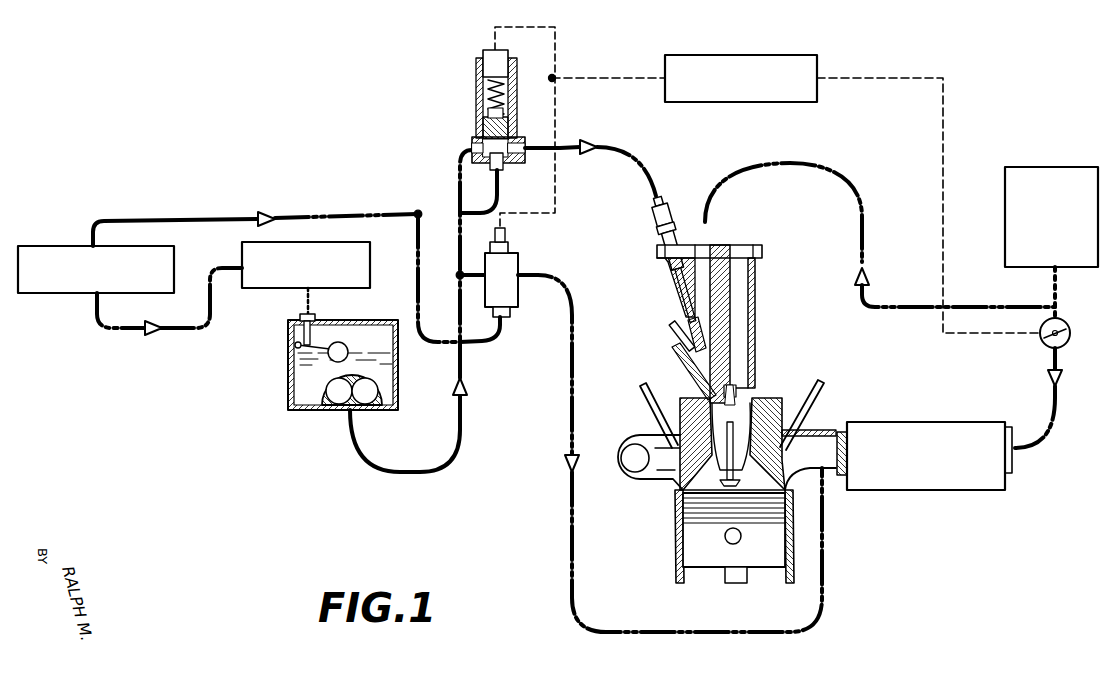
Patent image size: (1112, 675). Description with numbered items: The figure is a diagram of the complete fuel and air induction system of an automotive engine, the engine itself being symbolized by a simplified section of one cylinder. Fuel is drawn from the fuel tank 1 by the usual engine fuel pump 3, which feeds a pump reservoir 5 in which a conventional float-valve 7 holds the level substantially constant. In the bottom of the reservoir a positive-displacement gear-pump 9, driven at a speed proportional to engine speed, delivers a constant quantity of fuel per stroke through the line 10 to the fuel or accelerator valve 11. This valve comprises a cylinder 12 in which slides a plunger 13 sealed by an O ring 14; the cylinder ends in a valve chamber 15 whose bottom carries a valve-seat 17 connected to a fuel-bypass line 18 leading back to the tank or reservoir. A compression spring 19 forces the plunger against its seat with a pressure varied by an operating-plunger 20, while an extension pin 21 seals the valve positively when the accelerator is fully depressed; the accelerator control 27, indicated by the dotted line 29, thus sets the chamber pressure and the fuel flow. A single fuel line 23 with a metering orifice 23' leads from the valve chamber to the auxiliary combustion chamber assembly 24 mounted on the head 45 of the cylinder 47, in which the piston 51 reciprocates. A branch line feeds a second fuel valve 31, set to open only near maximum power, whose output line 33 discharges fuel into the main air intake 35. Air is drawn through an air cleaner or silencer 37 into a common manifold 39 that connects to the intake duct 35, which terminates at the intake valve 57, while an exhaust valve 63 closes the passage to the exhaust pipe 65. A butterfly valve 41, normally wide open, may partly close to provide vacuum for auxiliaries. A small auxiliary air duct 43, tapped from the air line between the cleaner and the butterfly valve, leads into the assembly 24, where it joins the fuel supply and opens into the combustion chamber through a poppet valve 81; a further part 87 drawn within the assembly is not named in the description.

The fuel tank 1 is at (40, 248).
The engine fuel pump 3 is at (256, 289).
The pump reservoir 5 is at (294, 383).
The float-valve 7 is at (299, 345).
The gear-pump 9 is at (340, 412).
The line 10 is at (436, 468).
The fuel or accelerator valve 11 is at (487, 121).
The cylinder 12 is at (477, 70).
The plunger 13 is at (488, 112).
The O ring 14 is at (482, 140).
The valve chamber 15 is at (515, 160).
The valve-seat 17 is at (494, 170).
The fuel-bypass line 18 is at (390, 214).
The compression spring 19 is at (510, 86).
The operating-plunger 20 is at (488, 52).
The extension pin 21 is at (505, 116).
The fuel line 23 is at (590, 156).
The metering orifice 23' is at (679, 259).
The auxiliary combustion chamber assembly 24 is at (757, 300).
The accelerator control 27 is at (745, 102).
The dotted line 29 is at (614, 78).
The second fuel valve 31 is at (518, 264).
The output line 33 is at (575, 340).
The main air intake 35 is at (814, 432).
The air cleaner or silencer 37 is at (1005, 214).
The air manifold 39 is at (920, 490).
The butterfly valve 41 is at (1067, 324).
The auxiliary air duct 43 is at (828, 172).
The cylinder head 45 is at (782, 400).
The cylinder 47 is at (676, 540).
The piston 51 is at (710, 565).
The intake valve 57 is at (820, 384).
The exhaust valve 63 is at (638, 388).
The exhaust pipe 65 is at (634, 452).
The poppet valve 81 is at (706, 396).
The intake valve 87 is at (736, 378).